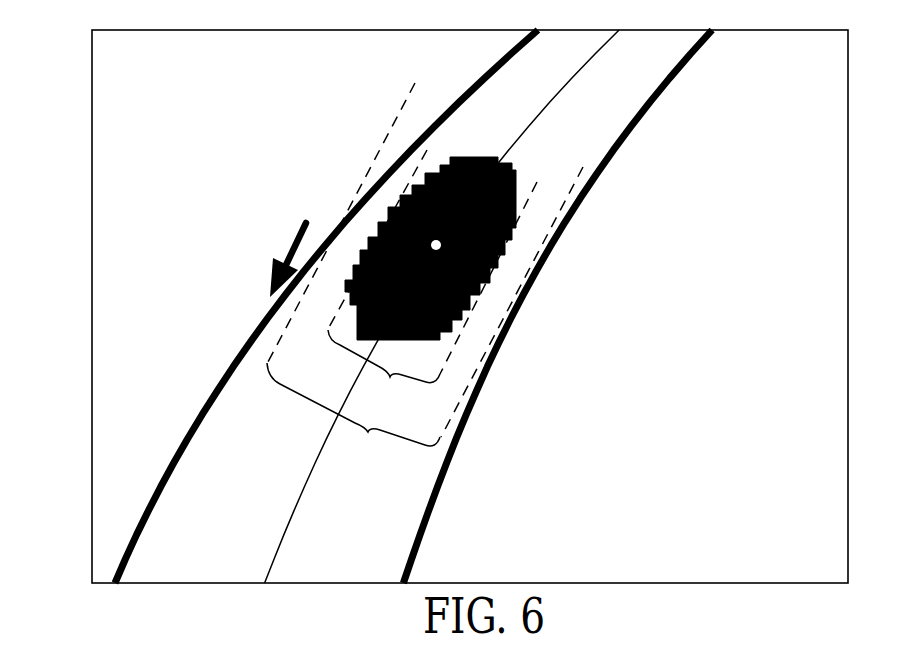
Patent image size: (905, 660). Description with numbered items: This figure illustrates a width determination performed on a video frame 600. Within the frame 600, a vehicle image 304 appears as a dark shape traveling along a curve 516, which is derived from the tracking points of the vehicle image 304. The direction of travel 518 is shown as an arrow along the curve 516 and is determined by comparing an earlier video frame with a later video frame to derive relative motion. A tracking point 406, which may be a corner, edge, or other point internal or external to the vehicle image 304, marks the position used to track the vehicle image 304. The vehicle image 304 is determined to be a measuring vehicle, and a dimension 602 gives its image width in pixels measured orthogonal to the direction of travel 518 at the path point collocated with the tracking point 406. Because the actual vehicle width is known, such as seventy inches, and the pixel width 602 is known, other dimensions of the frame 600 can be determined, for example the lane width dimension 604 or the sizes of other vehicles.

The frame 600 is at (92, 43).
The curve 516 is at (502, 160).
The direction of travel 518 is at (287, 249).
The tracking point 406 is at (438, 243).
The vehicle image 304 is at (386, 328).
The image width dimension 602 is at (432, 276).
The lane width dimension 604 is at (425, 273).